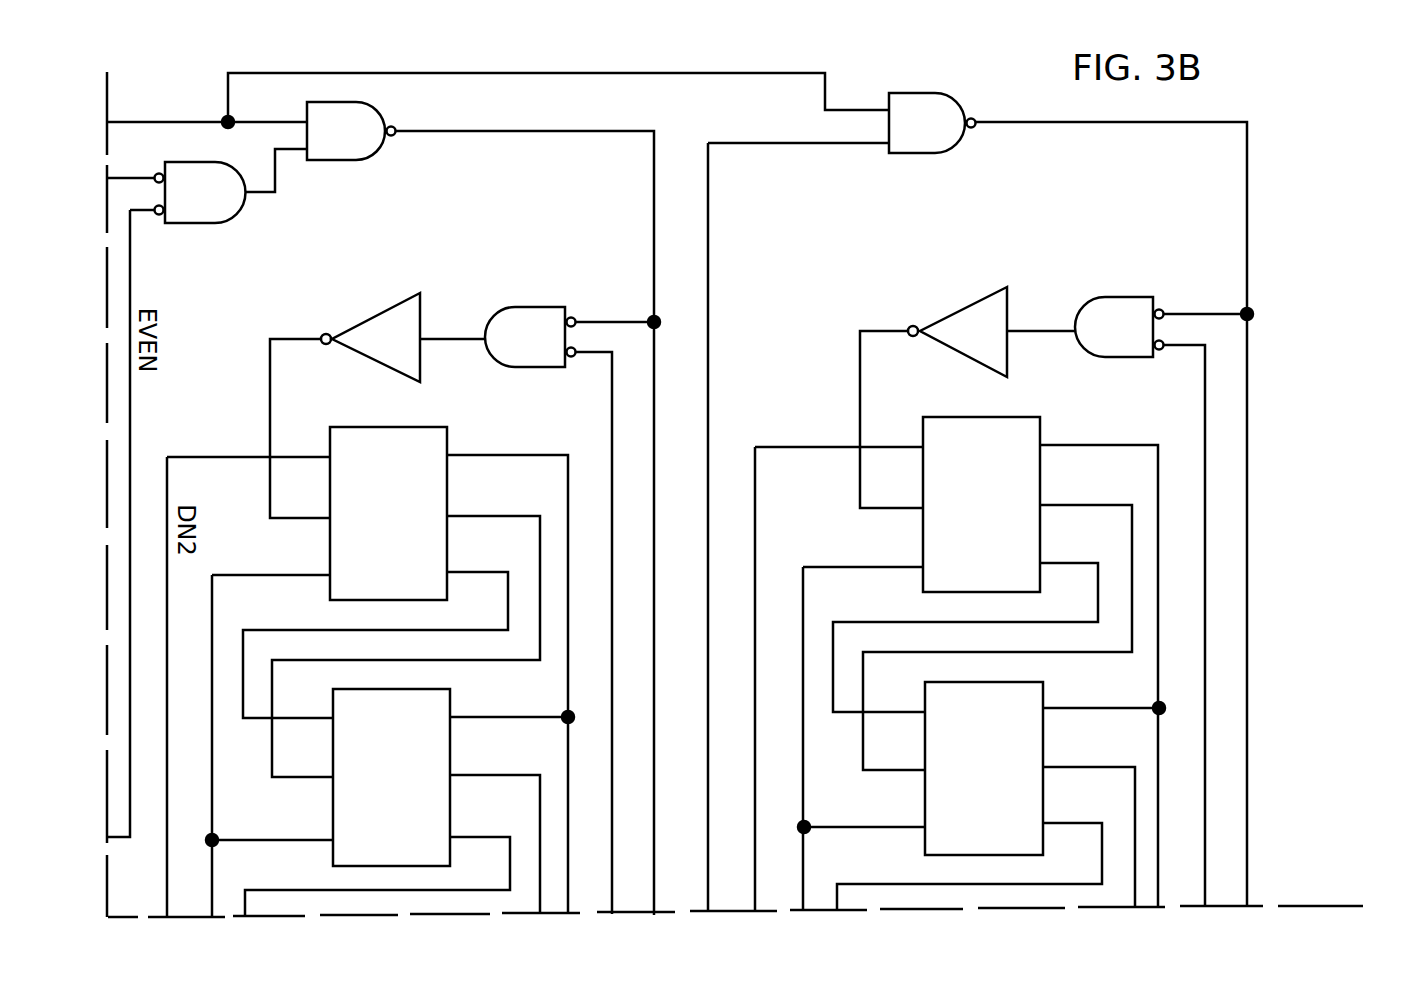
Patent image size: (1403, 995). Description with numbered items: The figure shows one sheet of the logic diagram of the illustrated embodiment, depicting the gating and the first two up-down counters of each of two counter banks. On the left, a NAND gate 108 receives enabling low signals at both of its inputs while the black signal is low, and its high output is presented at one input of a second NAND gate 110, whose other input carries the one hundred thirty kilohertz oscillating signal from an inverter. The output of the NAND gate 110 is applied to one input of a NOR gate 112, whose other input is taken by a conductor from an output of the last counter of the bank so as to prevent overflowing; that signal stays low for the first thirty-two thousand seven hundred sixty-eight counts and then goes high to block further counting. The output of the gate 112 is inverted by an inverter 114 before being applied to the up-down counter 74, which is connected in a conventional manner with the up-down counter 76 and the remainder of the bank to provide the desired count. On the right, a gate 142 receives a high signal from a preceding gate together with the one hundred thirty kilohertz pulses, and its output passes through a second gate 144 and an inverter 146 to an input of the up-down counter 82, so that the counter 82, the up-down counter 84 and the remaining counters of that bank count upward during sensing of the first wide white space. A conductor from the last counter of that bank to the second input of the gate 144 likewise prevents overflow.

The up-down counter 74 is at (448, 440).
The up-down counter 76 is at (450, 708).
The up-down counter 82 is at (1042, 432).
The up-down counter 84 is at (1045, 698).
The NAND gate 108 is at (232, 222).
The second NAND gate 110 is at (370, 160).
The NOR gate 112 is at (518, 306).
The inverter 114 is at (375, 315).
The gate 142 is at (945, 153).
The second gate 144 is at (1110, 296).
The inverter 146 is at (945, 315).